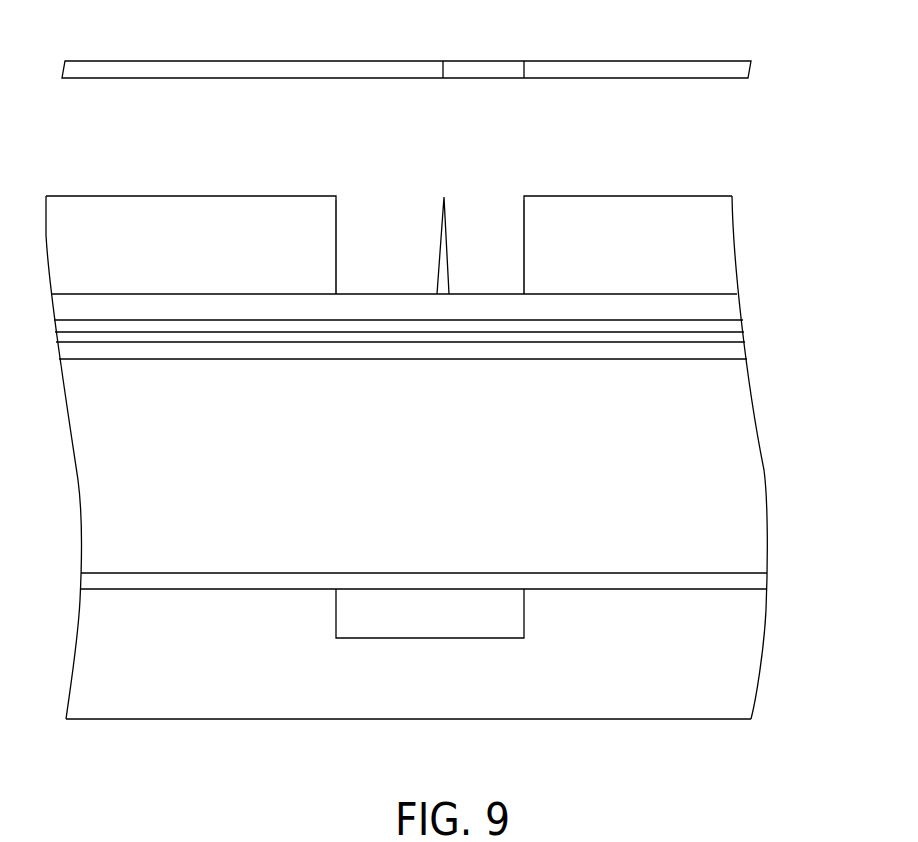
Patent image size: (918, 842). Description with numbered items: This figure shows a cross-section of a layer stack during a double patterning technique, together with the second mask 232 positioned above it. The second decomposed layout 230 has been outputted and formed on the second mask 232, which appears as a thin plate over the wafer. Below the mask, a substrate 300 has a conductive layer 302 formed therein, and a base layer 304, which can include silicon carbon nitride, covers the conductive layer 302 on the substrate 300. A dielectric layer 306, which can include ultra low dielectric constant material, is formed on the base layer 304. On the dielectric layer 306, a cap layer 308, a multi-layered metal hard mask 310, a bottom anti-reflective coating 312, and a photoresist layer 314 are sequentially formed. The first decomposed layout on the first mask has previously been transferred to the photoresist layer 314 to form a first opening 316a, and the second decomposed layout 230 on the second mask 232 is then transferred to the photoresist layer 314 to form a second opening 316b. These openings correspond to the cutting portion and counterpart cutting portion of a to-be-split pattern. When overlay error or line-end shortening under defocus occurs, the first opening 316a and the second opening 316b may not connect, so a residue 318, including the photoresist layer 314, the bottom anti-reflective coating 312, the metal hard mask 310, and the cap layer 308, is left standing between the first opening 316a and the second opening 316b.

The second decomposed layout 230 is at (481, 66).
The second mask 232 is at (749, 69).
The substrate 300 is at (452, 706).
The conductive layer 302 is at (450, 628).
The base layer 304 is at (762, 582).
The dielectric layer 306 is at (760, 480).
The cap layer 308 is at (738, 352).
The multi-layered metal hard mask 310 is at (755, 320).
The bottom anti-reflective coating 312 is at (737, 302).
The photoresist layer 314 is at (735, 241).
The first opening 316a is at (398, 205).
The second opening 316b is at (509, 205).
The residue 318 is at (444, 197).